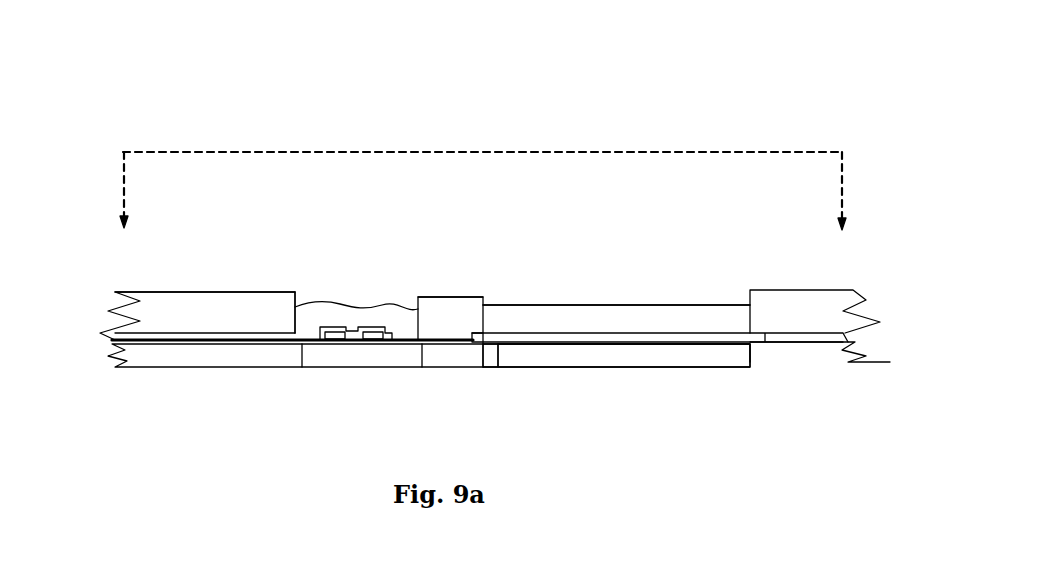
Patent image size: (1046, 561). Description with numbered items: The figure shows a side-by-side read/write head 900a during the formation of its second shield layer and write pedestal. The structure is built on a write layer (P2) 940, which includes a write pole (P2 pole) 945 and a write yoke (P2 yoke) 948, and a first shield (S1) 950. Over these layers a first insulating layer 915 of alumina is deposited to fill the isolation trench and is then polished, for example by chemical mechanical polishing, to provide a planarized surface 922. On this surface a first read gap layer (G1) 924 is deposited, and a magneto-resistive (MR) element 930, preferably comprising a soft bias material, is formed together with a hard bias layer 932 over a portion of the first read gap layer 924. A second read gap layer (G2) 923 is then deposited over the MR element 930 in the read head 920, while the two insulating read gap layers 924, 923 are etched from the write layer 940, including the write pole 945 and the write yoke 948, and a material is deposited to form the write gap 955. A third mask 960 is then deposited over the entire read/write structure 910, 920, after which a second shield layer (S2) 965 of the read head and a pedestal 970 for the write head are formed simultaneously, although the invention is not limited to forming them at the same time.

The side-by-side read/write head 900a is at (695, 72).
The read/write structure 910 is at (598, 225).
The first insulating layer 915 is at (114, 345).
The read head 920 is at (331, 245).
The planarized surface 922 is at (198, 325).
The second read gap layer (G2) 923 is at (115, 334).
The first read gap layer (G1) 924 is at (112, 342).
The magneto-resistive (MR) element 930 is at (351, 341).
The hard bias layer 932 is at (337, 341).
The write layer (P2) 940 is at (598, 376).
The write pole (P2 pole) 945 is at (490, 352).
The write yoke (P2 yoke) 948 is at (687, 350).
The first shield (S1) 950 is at (322, 352).
The write gap 955 is at (510, 335).
The third mask 960 is at (242, 298).
The second shield layer (S2) 965 is at (363, 307).
The pedestal 970 is at (643, 315).